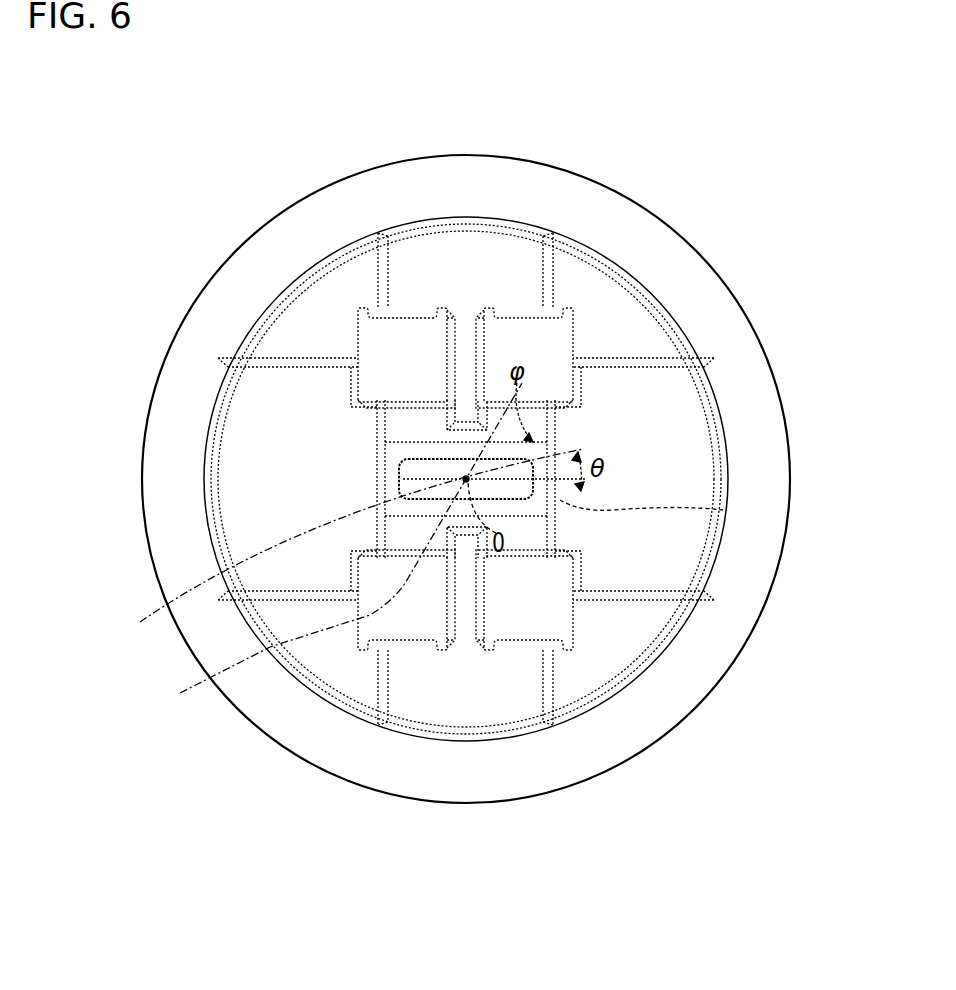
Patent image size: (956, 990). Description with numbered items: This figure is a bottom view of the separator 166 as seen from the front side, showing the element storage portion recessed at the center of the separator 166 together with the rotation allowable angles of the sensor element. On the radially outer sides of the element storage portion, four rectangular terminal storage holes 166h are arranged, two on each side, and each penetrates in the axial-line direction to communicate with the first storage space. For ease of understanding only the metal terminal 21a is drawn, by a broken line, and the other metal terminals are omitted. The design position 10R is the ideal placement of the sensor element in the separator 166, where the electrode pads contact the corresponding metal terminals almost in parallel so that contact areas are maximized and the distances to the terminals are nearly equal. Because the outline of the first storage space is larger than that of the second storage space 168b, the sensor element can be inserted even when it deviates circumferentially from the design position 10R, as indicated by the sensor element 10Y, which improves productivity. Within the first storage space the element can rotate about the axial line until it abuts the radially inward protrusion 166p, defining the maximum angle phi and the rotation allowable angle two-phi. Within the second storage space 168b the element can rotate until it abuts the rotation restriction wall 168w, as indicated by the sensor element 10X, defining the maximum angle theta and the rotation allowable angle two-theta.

The separator 166 is at (205, 198).
The terminal storage hole 166h is at (523, 337).
The protrusion 166p is at (378, 425).
The metal terminal 21a is at (373, 457).
The second storage space 168b is at (392, 488).
The sensor element 10X is at (340, 543).
The sensor element 10Y is at (339, 554).
The rotation restriction wall 168w is at (547, 470).
The design position 10R is at (723, 510).